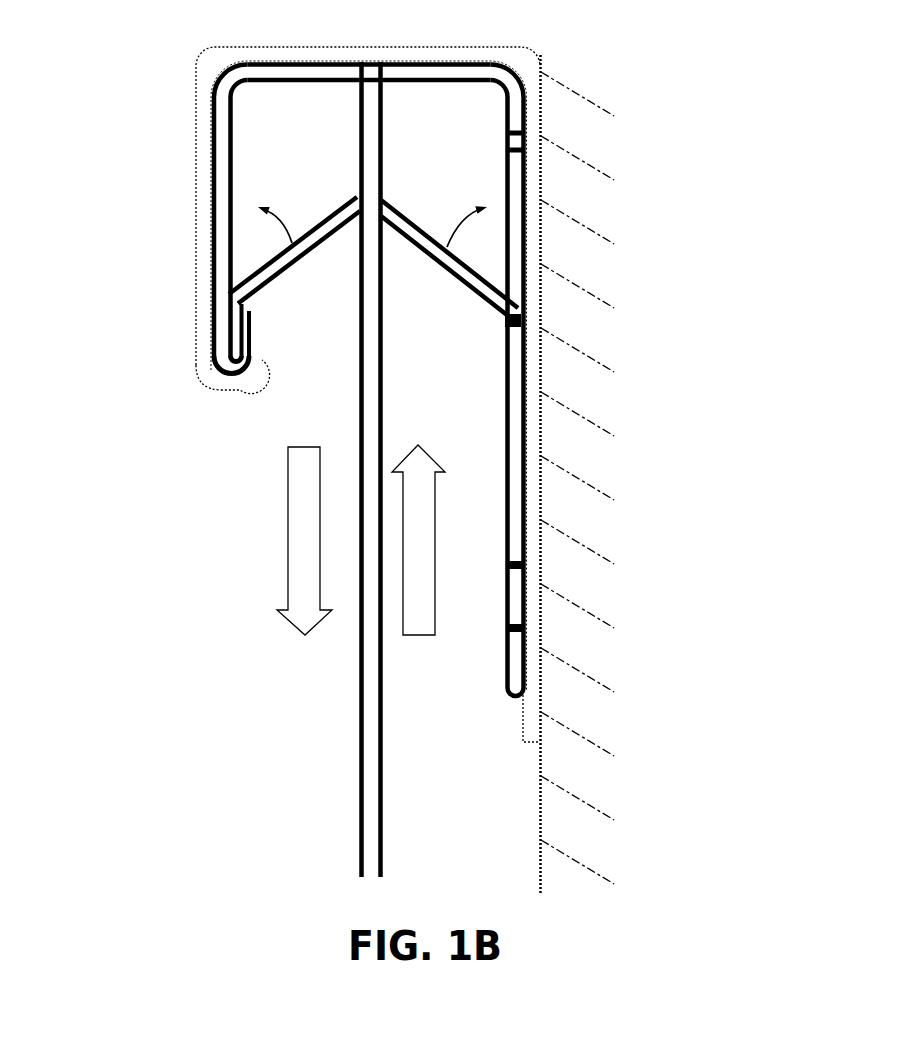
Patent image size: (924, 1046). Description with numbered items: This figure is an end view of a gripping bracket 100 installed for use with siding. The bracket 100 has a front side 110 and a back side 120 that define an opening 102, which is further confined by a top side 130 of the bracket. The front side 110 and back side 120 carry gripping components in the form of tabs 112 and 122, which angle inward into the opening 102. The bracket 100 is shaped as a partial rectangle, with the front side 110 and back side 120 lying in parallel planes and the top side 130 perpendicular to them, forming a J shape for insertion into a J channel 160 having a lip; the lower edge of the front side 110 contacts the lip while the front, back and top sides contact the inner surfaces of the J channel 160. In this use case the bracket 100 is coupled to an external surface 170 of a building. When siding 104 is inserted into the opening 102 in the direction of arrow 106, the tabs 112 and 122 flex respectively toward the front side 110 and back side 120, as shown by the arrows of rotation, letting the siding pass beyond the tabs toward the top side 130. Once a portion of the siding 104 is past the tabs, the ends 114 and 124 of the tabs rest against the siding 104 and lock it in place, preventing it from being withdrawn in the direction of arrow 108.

The gripping bracket 100 is at (798, 64).
The opening 102 is at (431, 140).
The siding 104 is at (358, 752).
The arrow 106 is at (437, 567).
The arrow 108 is at (288, 553).
The front side 110 is at (228, 158).
The tab 112 is at (267, 290).
The end of tab 114 is at (358, 198).
The back side 120 is at (507, 174).
The tab 122 is at (478, 297).
The end of tab 124 is at (384, 200).
The top side 130 is at (430, 81).
The J channel 160 is at (188, 192).
The external surface of a building 170 is at (578, 92).